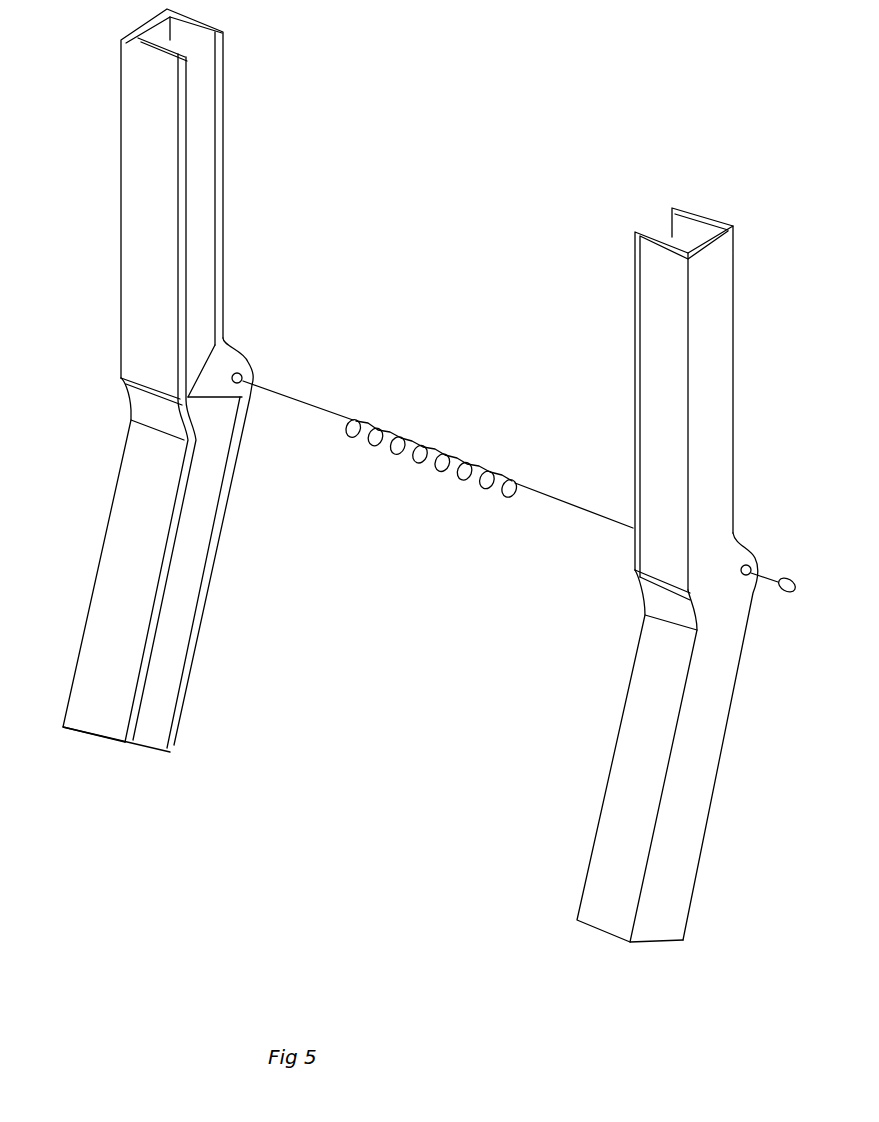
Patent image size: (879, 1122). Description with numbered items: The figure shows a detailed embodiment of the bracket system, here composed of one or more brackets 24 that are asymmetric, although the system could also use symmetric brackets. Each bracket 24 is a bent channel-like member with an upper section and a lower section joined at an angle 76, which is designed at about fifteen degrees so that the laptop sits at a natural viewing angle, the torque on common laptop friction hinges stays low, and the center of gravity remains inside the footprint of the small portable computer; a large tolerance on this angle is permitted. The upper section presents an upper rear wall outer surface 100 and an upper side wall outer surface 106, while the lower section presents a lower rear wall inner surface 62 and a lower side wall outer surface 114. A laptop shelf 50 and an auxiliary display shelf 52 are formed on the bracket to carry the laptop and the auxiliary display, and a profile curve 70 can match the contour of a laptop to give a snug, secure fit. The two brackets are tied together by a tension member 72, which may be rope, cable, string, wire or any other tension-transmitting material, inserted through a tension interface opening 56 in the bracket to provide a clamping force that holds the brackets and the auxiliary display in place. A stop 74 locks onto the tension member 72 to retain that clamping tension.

The bracket 24 is at (119, 252).
The laptop shelf 50 is at (232, 405).
The auxiliary display shelf 52 is at (203, 376).
The profile curve 70 is at (205, 456).
The lower rear wall inner surface 62 is at (148, 752).
The tension member 72 is at (428, 418).
The upper rear wall outer surface 100 is at (675, 532).
The upper side wall outer surface 106 is at (710, 362).
The lower side wall outer surface 114 is at (685, 840).
The angle 76 is at (631, 604).
The tension interface opening 56 is at (738, 590).
The stop 74 is at (793, 602).